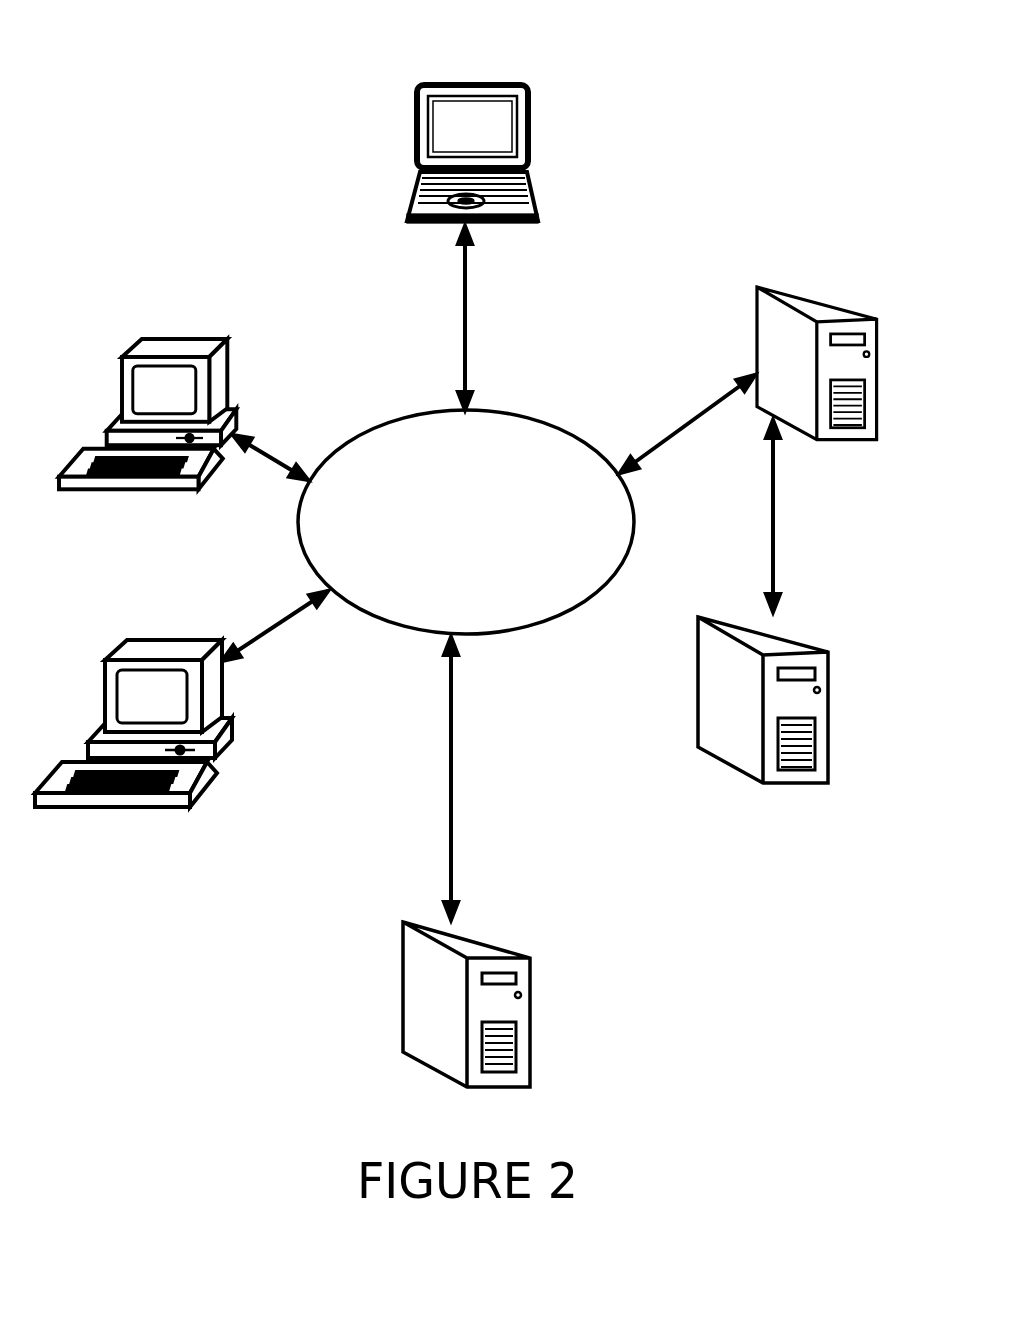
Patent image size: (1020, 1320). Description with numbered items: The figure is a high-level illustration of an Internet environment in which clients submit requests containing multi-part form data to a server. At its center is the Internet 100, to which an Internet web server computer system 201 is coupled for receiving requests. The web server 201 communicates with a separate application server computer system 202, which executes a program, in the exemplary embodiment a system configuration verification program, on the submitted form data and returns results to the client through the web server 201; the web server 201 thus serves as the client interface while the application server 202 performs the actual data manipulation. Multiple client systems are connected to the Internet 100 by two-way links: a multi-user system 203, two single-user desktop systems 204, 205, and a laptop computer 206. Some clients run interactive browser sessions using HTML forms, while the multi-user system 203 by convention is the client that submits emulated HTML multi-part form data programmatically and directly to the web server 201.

The Internet 100 is at (483, 589).
The Internet web server computer system 201 is at (850, 302).
The application server computer system 202 is at (738, 772).
The multi-user system 203 is at (403, 1000).
The single-user desktop system 204 is at (170, 637).
The single-user desktop system 205 is at (205, 335).
The laptop computer 206 is at (465, 85).